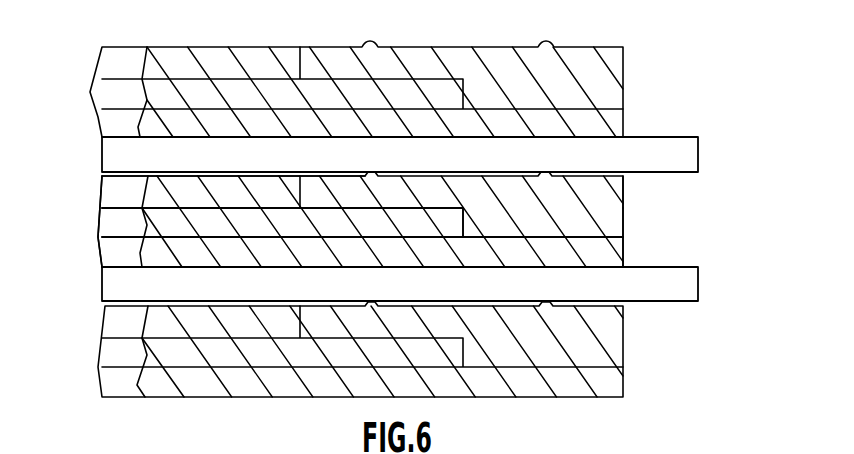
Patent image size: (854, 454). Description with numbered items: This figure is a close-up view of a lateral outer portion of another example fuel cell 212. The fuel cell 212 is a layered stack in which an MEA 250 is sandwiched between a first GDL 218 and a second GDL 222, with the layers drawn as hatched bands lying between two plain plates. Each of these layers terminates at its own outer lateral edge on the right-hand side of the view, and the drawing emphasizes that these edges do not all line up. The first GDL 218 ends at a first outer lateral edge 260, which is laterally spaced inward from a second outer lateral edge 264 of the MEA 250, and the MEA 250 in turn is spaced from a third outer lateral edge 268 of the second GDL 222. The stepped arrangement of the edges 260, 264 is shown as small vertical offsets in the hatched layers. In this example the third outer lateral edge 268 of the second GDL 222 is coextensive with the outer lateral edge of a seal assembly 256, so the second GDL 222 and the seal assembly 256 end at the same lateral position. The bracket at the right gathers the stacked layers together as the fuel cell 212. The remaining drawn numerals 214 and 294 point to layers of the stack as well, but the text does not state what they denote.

The fuel cell 212 is at (733, 136).
The second layer 214 is at (118, 227).
The first GDL 218 is at (113, 193).
The second GDL 222 is at (113, 257).
The MEA 250 is at (88, 240).
The seal assembly 256 is at (597, 195).
The first outer lateral edge 260 is at (300, 188).
The second outer lateral edge 264 is at (463, 222).
The third outer lateral edge 268 is at (623, 255).
The separator layer 294 is at (623, 210).